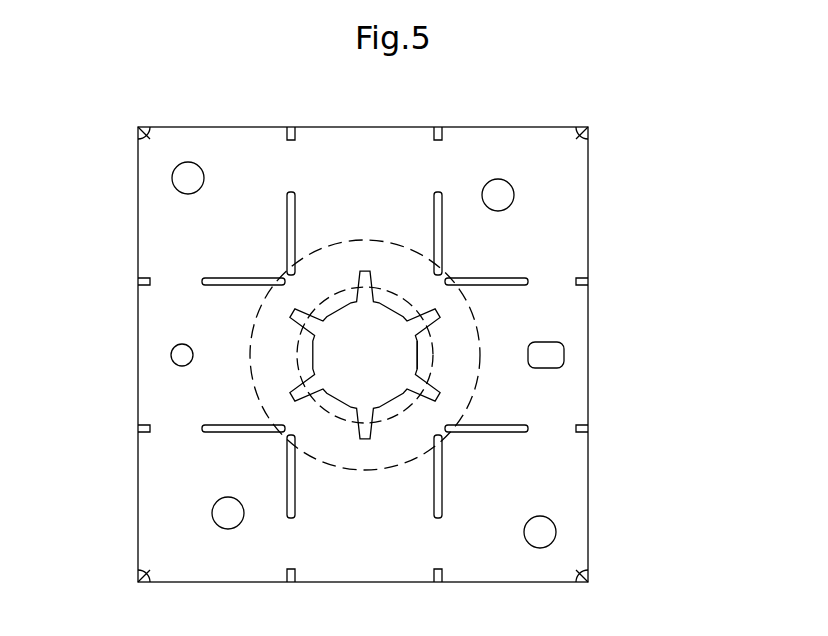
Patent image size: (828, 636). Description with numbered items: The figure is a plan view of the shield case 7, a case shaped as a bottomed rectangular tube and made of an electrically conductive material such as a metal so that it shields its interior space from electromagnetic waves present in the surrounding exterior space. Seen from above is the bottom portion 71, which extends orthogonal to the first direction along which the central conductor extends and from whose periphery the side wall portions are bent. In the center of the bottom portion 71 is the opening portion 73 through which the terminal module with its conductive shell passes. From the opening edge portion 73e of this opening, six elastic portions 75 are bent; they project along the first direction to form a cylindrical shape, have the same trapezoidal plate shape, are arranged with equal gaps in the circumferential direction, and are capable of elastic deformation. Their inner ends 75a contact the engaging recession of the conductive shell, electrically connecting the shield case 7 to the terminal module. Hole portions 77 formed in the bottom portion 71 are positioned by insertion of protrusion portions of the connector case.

The shield case 7 is at (548, 113).
The bottom portion 71 is at (170, 213).
The opening portion 73 is at (379, 343).
The opening edge portion 73e is at (431, 358).
The elastic portions 75 is at (392, 405).
The inner ends 75a is at (322, 368).
The hole portions 77 is at (232, 513).